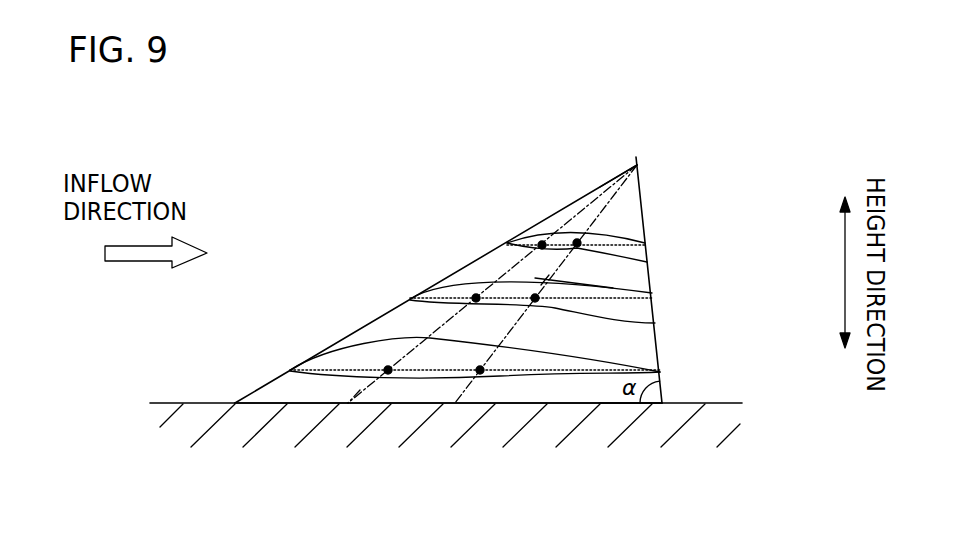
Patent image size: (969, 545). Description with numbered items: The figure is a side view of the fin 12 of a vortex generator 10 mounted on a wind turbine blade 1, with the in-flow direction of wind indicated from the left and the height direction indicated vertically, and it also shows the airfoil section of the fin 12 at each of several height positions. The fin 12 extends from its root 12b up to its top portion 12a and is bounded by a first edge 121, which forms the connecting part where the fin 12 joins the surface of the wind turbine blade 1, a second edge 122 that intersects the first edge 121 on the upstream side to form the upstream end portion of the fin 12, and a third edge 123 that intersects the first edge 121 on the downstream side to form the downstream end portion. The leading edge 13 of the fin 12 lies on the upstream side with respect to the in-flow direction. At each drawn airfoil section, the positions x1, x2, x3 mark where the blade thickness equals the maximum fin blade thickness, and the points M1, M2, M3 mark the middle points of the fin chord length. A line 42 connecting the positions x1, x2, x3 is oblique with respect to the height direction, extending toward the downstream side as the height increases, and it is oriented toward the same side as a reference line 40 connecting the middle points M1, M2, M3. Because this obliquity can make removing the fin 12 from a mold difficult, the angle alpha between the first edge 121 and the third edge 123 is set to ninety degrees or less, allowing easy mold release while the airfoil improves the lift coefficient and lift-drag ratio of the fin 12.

The wind turbine blade 1 is at (165, 402).
The vortex generator 10 is at (370, 186).
The fin 12 is at (481, 308).
The top portion 12a is at (638, 165).
The root 12b is at (620, 404).
The leading edge 13 is at (234, 402).
The reference line 40 is at (512, 322).
The line connecting maximum-thickness positions 42 is at (427, 337).
The first edge 121 is at (305, 404).
The second edge 122 is at (350, 335).
The third edge 123 is at (647, 215).
The middle point of fin chord length M1 is at (647, 262).
The middle point of fin chord length M2 is at (656, 323).
The middle point of fin chord length M3 is at (480, 371).
The maximum blade thickness position x1 is at (535, 224).
The maximum blade thickness position x2 is at (452, 274).
The maximum blade thickness position x3 is at (388, 371).